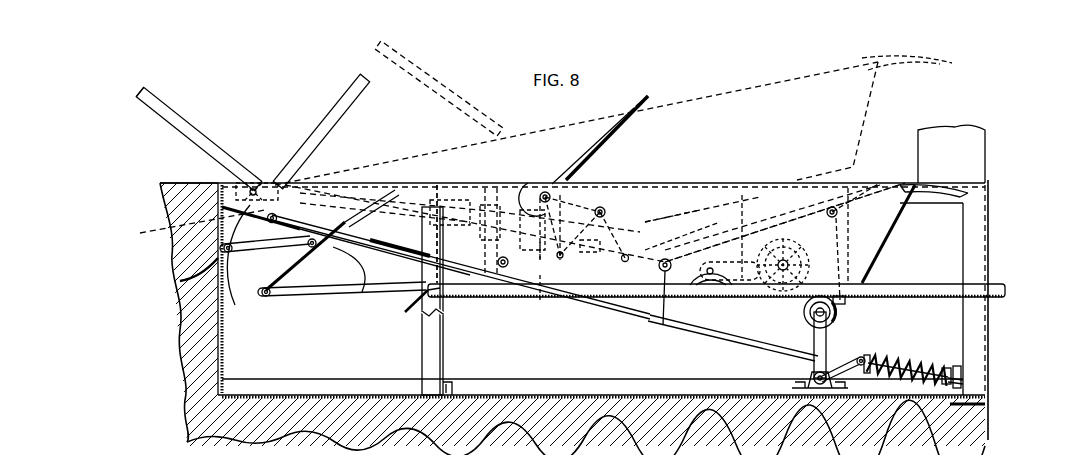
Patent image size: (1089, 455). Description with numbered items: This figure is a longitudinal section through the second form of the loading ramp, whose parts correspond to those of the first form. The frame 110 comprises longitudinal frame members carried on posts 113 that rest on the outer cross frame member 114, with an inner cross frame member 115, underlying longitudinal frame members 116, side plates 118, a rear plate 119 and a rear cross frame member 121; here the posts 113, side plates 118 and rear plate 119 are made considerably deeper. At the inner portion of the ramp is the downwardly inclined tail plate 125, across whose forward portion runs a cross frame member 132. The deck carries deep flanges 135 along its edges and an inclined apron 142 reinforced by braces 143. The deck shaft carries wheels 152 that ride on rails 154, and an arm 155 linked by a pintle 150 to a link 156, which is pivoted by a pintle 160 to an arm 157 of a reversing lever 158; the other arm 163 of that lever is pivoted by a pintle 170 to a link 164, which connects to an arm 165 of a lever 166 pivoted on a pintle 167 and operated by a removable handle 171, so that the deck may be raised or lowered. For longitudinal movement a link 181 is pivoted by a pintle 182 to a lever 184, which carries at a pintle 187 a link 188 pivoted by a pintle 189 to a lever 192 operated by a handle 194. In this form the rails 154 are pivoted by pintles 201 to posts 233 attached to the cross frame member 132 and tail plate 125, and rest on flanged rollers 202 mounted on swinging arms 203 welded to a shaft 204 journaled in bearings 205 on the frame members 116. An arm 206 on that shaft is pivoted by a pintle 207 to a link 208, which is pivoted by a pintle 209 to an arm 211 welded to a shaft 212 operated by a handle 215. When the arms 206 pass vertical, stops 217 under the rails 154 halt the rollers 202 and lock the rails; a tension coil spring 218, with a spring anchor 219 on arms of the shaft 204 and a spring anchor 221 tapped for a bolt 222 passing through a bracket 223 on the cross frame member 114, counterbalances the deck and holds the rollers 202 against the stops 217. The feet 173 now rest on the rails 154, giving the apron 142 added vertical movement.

The frame 110 is at (988, 179).
The posts 113 is at (975, 250).
The cross frame member 114 is at (986, 410).
The inner cross frame member 115 is at (212, 183).
The longitudinal frame members 116 is at (737, 388).
The side plates 118 is at (594, 357).
The rear plate 119 is at (218, 323).
The cross frame member 121 is at (220, 388).
The tail plate 125 is at (437, 183).
The cross frame member 132 is at (462, 393).
The flanges 135 is at (880, 238).
The apron 142 is at (965, 187).
The braces 143 is at (918, 196).
The pintle 150 is at (856, 178).
The wheels 152 is at (727, 300).
The rails 154 is at (930, 290).
The arm 155 is at (845, 228).
The link 156 is at (747, 235).
The arm 157 is at (662, 240).
The reversing lever 158 is at (650, 218).
The pintle 160 is at (663, 300).
The arm 163 is at (614, 247).
The link 164 is at (583, 238).
The arm 165 is at (538, 300).
The lever 166 is at (525, 190).
The pintle 167 is at (541, 180).
The pintle 170 is at (600, 177).
The handle 171 is at (621, 128).
The feet 173 is at (808, 305).
The link 181 is at (326, 288).
The pintle 182 is at (278, 300).
The lever 184 is at (306, 248).
The pintle 187 is at (366, 272).
The link 188 is at (282, 248).
The pintle 189 is at (191, 268).
The lever 192 is at (190, 226).
The handle 194 is at (308, 140).
The pintles 201 is at (414, 314).
The flanged rollers 202 is at (838, 316).
The swinging arms 203 is at (818, 338).
The shaft 204 is at (818, 385).
The bearings 205 is at (828, 386).
The arm 206 is at (852, 358).
The pintle 207 is at (862, 366).
The link 208 is at (700, 325).
The pintle 209 is at (270, 226).
The arm 211 is at (236, 303).
The shaft 212 is at (252, 183).
The handle 215 is at (178, 128).
The stops 217 is at (843, 296).
The tension coil spring 218 is at (926, 368).
The spring anchor 219 is at (880, 357).
The spring anchor 221 is at (950, 367).
The bolt 222 is at (964, 384).
The bracket 223 is at (958, 376).
The posts 233 is at (433, 343).